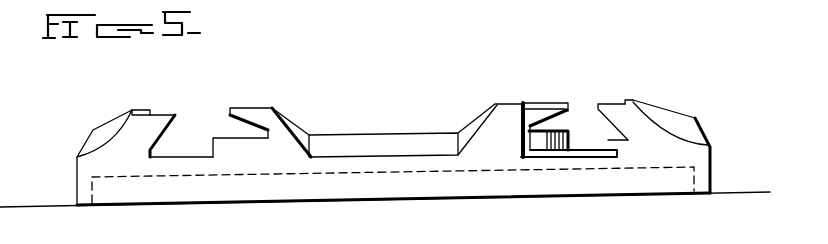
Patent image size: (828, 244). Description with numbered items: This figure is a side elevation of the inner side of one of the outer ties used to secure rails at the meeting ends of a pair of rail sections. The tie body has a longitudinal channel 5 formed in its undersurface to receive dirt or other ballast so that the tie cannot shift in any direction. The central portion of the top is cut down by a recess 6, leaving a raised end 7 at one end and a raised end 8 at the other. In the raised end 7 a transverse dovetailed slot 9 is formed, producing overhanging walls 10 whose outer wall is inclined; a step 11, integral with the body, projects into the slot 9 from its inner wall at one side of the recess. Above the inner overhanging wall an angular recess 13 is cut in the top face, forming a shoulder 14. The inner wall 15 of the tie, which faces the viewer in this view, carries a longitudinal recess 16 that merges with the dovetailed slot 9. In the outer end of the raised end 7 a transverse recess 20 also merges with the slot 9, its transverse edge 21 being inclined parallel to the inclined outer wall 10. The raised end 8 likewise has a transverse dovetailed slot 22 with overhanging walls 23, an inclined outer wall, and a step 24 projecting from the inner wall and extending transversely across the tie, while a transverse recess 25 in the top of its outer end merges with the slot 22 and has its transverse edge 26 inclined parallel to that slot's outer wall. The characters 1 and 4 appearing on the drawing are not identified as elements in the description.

The base body 1 is at (385, 182).
The base plate 4 is at (374, 198).
The longitudinal channel 5 is at (188, 178).
The recess 6 is at (397, 135).
The raised end 7 is at (495, 103).
The raised end 8 is at (283, 132).
The transverse dovetailed slot 9 is at (628, 140).
The overhanging walls 10 is at (567, 110).
The step 11 is at (547, 138).
The angular recess 13 is at (522, 110).
The shoulder 14 is at (538, 104).
The inner wall 15 is at (478, 190).
The longitudinal recess 16 is at (598, 158).
The transverse recess 20 is at (628, 100).
The transverse edge 21 is at (636, 101).
The transverse dovetailed slot 22 is at (182, 140).
The overhanging walls 23 is at (178, 120).
The step 24 is at (240, 140).
The transverse recess 25 is at (150, 110).
The transverse edge 26 is at (131, 111).